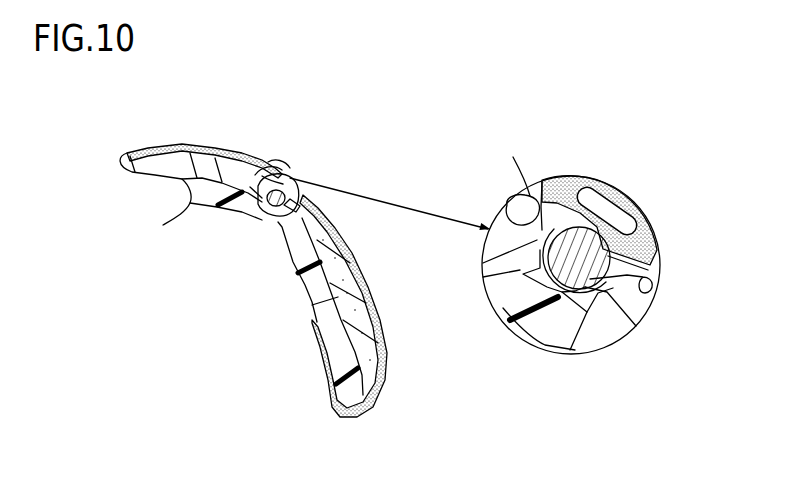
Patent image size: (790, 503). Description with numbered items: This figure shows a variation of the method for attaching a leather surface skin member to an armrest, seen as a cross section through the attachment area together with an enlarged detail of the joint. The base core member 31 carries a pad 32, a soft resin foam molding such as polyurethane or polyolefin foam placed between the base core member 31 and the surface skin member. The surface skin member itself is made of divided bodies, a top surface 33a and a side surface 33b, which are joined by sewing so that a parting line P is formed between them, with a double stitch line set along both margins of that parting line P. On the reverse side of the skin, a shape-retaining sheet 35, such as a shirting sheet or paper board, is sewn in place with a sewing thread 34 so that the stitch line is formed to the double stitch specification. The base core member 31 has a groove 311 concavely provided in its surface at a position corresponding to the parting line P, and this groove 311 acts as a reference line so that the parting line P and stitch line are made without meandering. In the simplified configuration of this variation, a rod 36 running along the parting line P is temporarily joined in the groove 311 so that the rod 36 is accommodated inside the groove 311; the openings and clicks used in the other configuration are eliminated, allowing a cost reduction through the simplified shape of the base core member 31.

The base core member 31 is at (320, 295).
The groove 311 is at (267, 220).
The pad 32 is at (380, 403).
The top surface 33a is at (188, 146).
The side surface 33b is at (380, 303).
The sewing thread 34 is at (267, 162).
The shape-retaining sheet 35 is at (282, 215).
The rod 36 is at (250, 213).
The parting line P is at (288, 175).